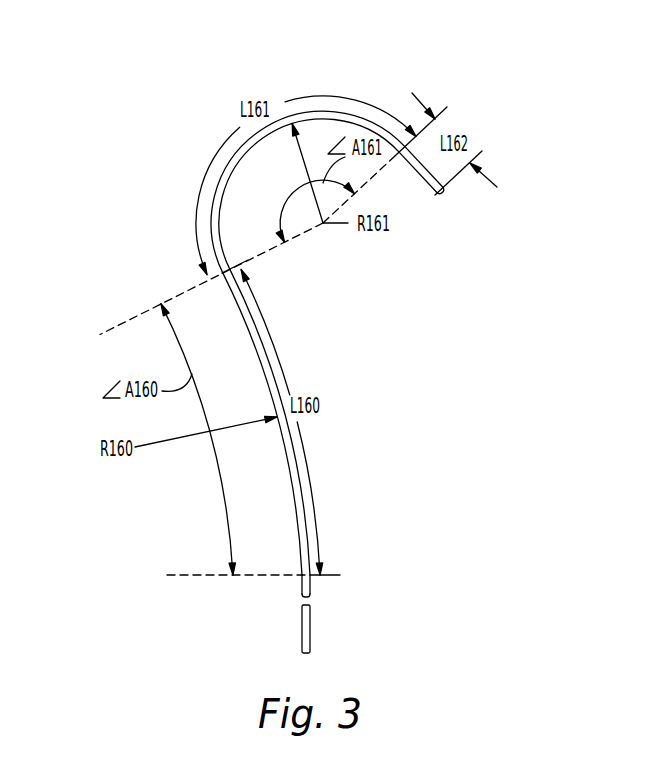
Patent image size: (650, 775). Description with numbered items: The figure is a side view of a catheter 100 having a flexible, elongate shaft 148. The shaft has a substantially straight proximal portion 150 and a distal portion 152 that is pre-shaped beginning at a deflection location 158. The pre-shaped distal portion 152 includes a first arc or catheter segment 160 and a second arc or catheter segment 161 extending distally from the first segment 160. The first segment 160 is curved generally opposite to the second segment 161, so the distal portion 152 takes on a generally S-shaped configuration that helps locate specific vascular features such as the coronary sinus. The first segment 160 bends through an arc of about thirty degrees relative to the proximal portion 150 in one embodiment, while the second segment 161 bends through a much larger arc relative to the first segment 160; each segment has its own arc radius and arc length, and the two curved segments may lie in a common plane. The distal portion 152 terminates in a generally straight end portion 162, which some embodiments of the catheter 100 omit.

The catheter 100 is at (160, 108).
The distal portion 152 is at (293, 490).
The second arc or catheter segment 161 is at (226, 171).
The end portion 162 is at (421, 177).
The first arc or catheter segment 160 is at (241, 314).
The deflection location 158 is at (313, 590).
The flexible, elongate shaft 148 is at (300, 586).
The proximal portion 150 is at (313, 628).